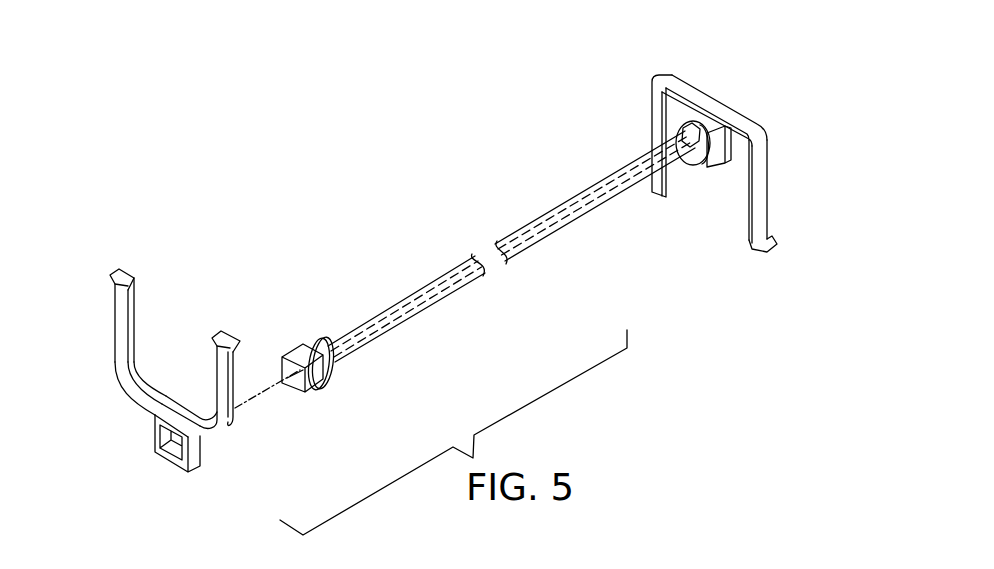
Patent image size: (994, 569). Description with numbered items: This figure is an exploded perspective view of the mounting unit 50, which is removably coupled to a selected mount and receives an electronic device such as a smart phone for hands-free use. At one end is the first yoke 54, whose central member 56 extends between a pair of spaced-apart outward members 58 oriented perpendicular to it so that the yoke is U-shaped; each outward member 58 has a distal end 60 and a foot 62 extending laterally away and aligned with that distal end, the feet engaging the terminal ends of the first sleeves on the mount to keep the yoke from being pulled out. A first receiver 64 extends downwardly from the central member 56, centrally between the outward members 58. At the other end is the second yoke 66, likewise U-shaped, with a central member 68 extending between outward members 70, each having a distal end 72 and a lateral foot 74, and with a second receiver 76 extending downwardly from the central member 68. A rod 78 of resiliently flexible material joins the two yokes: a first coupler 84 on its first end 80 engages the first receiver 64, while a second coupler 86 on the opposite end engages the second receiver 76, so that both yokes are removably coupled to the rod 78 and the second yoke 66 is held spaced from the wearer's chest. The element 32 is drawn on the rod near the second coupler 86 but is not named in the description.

The mounting unit 50 is at (498, 192).
The square nut 32 is at (315, 393).
The second coupler 86 is at (321, 336).
The rod 78 is at (413, 286).
The outward members 70 is at (158, 373).
The distal end 72 is at (131, 271).
The foot 74 is at (110, 277).
The central member 68 is at (138, 405).
The second yoke 66 is at (220, 440).
The second receiver 76 is at (193, 475).
The first end 80 is at (697, 93).
The central member 56 is at (735, 108).
The first yoke 54 is at (695, 173).
The outward members 58 is at (651, 114).
The distal end 60 is at (748, 246).
The foot 62 is at (773, 247).
The first coupler 84 is at (664, 194).
The first receiver 64 is at (727, 173).